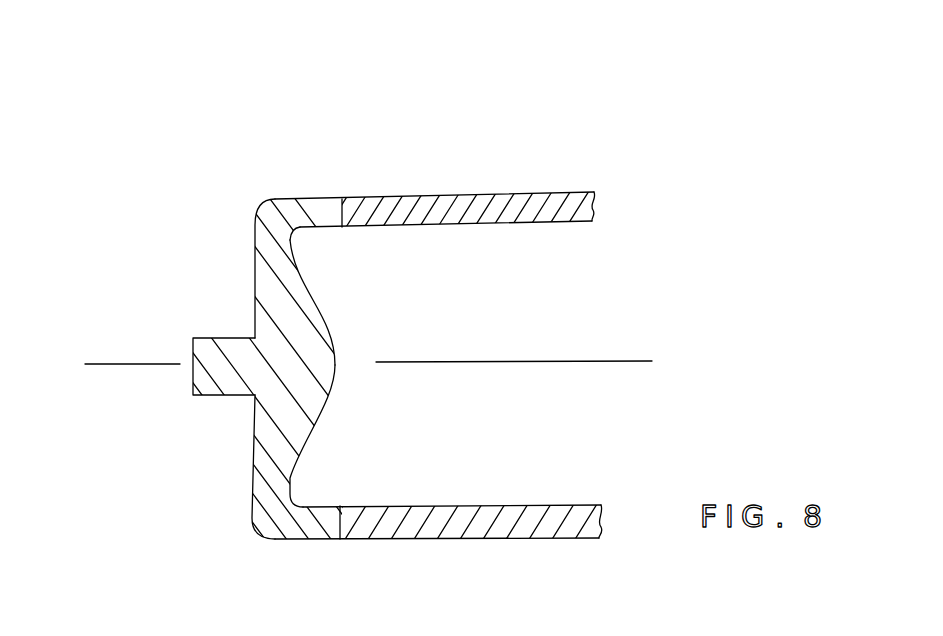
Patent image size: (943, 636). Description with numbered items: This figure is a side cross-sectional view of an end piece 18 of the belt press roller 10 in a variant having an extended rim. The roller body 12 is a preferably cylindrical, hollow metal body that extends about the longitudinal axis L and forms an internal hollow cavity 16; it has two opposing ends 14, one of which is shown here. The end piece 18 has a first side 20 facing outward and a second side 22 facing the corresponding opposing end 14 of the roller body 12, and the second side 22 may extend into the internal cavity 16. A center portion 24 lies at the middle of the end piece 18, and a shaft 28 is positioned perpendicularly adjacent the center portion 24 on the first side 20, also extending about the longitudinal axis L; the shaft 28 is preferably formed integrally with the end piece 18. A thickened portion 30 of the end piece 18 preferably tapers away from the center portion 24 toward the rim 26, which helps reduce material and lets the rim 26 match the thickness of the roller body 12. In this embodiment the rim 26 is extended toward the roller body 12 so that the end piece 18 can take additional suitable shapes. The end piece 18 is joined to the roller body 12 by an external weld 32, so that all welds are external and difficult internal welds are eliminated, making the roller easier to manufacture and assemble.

The belt press roller 10 is at (258, 115).
The roller body 12 is at (472, 206).
The opposing ends 14 is at (368, 198).
The internal hollow cavity 16 is at (530, 311).
The end piece 18 is at (258, 489).
The first side 20 is at (255, 265).
The second side 22 is at (289, 245).
The center portion 24 is at (277, 357).
The rim 26 is at (320, 541).
The shaft 28 is at (200, 396).
The thickened portion 30 is at (310, 398).
The external weld 32 is at (340, 198).
The longitudinal axis L is at (90, 364).